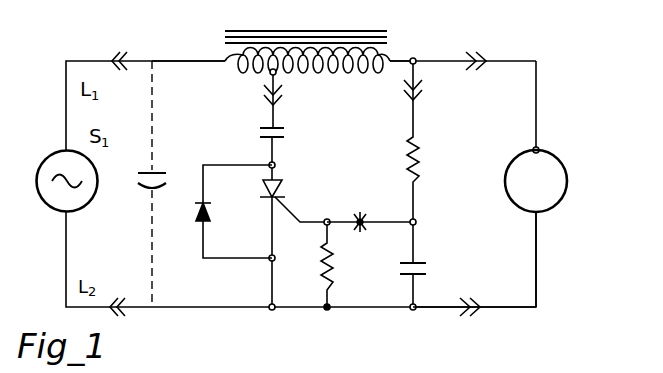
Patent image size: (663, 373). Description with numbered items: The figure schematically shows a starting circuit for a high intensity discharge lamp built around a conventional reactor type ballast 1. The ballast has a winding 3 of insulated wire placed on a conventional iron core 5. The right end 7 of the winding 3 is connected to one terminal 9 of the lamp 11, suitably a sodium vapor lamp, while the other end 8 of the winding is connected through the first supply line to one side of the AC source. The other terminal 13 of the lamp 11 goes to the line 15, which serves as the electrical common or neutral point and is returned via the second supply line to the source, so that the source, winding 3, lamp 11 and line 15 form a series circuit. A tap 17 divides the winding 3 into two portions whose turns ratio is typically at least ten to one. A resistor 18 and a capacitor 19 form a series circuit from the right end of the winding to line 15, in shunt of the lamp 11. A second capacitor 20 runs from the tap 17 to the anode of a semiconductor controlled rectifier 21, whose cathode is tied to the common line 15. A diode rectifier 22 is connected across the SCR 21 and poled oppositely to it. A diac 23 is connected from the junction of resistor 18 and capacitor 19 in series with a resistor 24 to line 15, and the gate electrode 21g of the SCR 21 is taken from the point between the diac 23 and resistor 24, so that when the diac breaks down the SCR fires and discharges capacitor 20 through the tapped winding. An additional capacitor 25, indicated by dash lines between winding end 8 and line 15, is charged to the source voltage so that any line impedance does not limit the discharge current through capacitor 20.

The reactor type ballast 1 is at (306, 23).
The winding 3 is at (307, 75).
The iron core 5 is at (401, 32).
The right end of the winding 7 is at (414, 46).
The other end of winding 8 is at (188, 43).
The lamp terminal 9 is at (549, 133).
The high intensity discharge type lamp 11 is at (551, 175).
The other terminal of lamp 13 is at (554, 259).
The line 15 is at (474, 327).
The tap 17 is at (266, 101).
The resistor 18 is at (429, 143).
The capacitor 19 is at (430, 264).
The second capacitor 20 is at (289, 146).
The semiconductor controlled rectifier 21 is at (258, 236).
The gate electrode 21g is at (305, 199).
The diode rectifier 22 is at (217, 211).
The diac 23 is at (370, 245).
The resistor 24 is at (309, 264).
The additional capacitor 25 is at (163, 161).